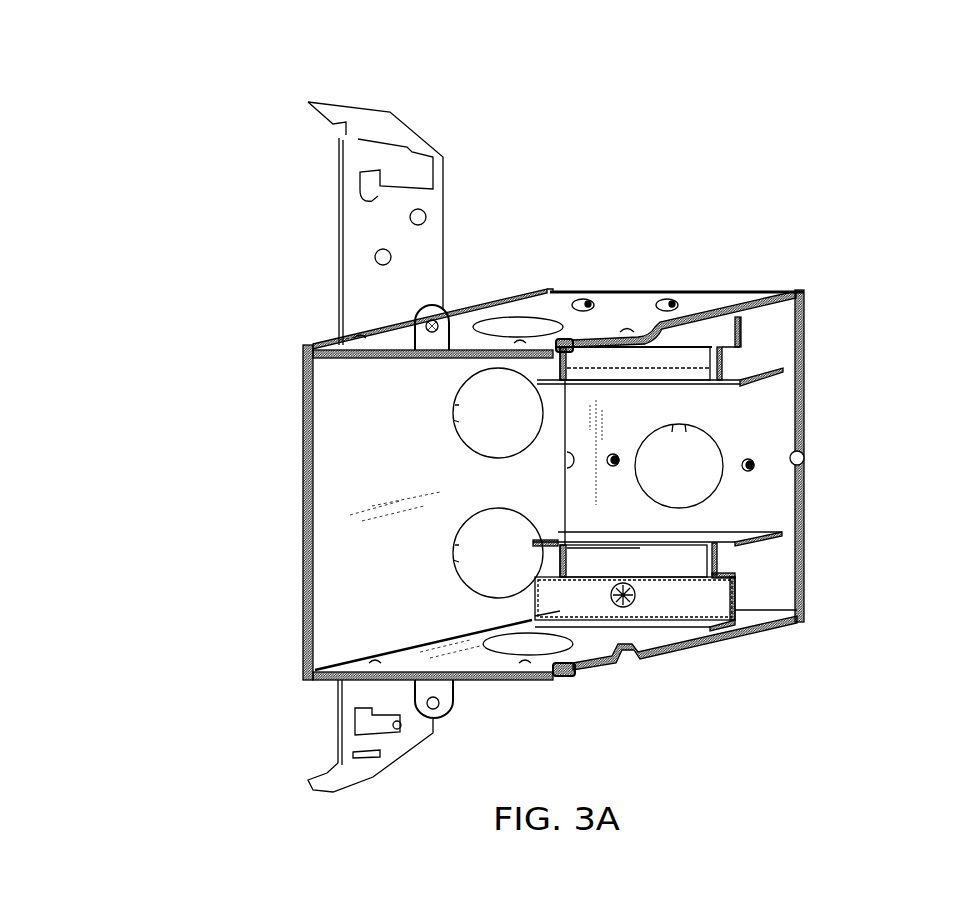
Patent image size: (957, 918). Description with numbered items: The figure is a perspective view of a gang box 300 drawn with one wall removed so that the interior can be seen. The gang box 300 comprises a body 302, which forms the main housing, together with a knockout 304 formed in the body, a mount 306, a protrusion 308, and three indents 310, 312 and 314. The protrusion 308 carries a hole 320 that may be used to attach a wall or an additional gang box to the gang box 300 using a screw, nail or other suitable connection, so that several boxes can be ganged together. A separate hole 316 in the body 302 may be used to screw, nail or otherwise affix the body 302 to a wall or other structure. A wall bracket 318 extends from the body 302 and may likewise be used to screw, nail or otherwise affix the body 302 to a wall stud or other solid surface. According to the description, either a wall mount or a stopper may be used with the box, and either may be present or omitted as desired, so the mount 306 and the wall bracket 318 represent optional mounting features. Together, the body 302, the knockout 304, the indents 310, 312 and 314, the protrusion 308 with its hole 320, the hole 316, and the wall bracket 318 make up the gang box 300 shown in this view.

The gang box 300 is at (535, 447).
The body 302 is at (806, 296).
The knockout 304 is at (716, 440).
The mount 306 is at (443, 307).
The protrusion 308 is at (642, 333).
The indent 310 is at (564, 338).
The indent 312 is at (567, 680).
The indent 314 is at (803, 460).
The hole 316 is at (755, 468).
The wall bracket 318 is at (348, 288).
The hole 320 is at (627, 326).